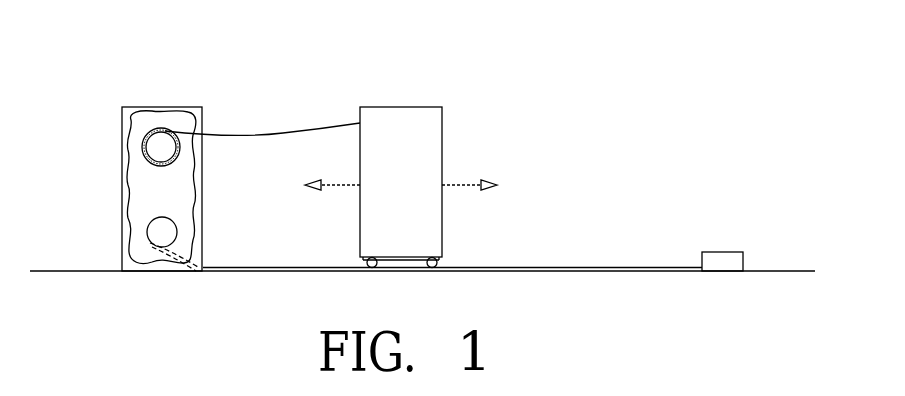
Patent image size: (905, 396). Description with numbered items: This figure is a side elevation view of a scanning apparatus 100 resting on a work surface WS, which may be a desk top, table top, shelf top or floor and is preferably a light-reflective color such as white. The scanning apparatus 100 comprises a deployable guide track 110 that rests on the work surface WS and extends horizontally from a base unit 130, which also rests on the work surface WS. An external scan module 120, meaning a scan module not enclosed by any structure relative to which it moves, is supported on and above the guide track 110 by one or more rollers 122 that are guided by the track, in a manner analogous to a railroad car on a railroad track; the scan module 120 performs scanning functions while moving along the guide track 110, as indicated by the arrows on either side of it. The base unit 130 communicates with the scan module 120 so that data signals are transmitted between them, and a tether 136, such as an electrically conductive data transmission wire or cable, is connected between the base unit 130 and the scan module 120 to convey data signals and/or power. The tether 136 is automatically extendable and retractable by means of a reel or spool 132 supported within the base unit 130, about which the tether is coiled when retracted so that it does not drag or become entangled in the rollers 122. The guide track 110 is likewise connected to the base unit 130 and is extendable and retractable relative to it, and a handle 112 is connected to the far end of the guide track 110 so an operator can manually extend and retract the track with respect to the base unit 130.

The scanning apparatus 100 is at (512, 70).
The deployable guide track 110 is at (581, 265).
The handle 112 is at (720, 260).
The external scan module 120 is at (431, 112).
The rollers 122 is at (371, 257).
The base unit 130 is at (197, 107).
The spool 132 is at (160, 153).
The tether 136 is at (282, 132).
The work surface WS is at (780, 267).